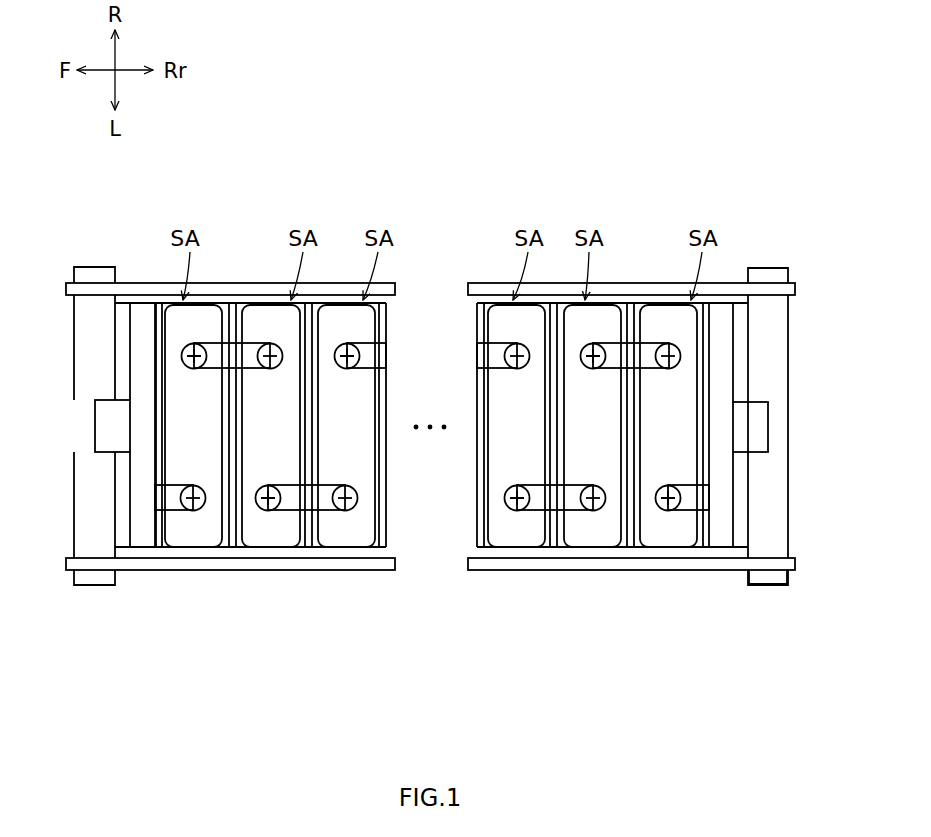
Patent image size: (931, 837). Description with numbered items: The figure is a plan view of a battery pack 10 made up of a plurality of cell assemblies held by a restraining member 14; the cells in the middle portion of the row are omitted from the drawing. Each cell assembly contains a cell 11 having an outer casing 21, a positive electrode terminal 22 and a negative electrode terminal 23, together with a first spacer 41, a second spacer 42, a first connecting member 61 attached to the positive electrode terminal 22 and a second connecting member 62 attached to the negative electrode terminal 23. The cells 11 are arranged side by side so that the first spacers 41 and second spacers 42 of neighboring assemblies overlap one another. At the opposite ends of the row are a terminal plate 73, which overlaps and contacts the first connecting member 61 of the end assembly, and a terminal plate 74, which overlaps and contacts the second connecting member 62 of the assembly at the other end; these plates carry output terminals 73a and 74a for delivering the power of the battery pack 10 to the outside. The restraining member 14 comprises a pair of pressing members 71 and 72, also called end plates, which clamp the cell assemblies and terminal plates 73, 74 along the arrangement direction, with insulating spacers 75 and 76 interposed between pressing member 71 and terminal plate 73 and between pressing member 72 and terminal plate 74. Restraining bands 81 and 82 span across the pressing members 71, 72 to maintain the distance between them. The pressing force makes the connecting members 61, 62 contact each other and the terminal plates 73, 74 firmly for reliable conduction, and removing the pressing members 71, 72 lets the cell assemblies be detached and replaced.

The battery pack 10 is at (473, 213).
The cell 11 is at (340, 303).
The restraining member 14 is at (392, 287).
The outer casing 21 is at (367, 326).
The positive electrode terminal 22 is at (193, 369).
The negative electrode terminal 23 is at (270, 369).
The first spacer 41 is at (303, 548).
The second spacer 42 is at (160, 548).
The first connecting member 61 is at (212, 343).
The second connecting member 62 is at (262, 343).
The pressing member 71 is at (788, 345).
The pressing member 72 is at (74, 340).
The terminal plate 73 is at (733, 478).
The output terminal 73a is at (768, 427).
The terminal plate 74 is at (130, 470).
The output terminal 74a is at (95, 427).
The insulating spacer 75 is at (737, 548).
The insulating spacer 76 is at (122, 548).
The restraining band 81 is at (730, 285).
The restraining band 82 is at (785, 585).